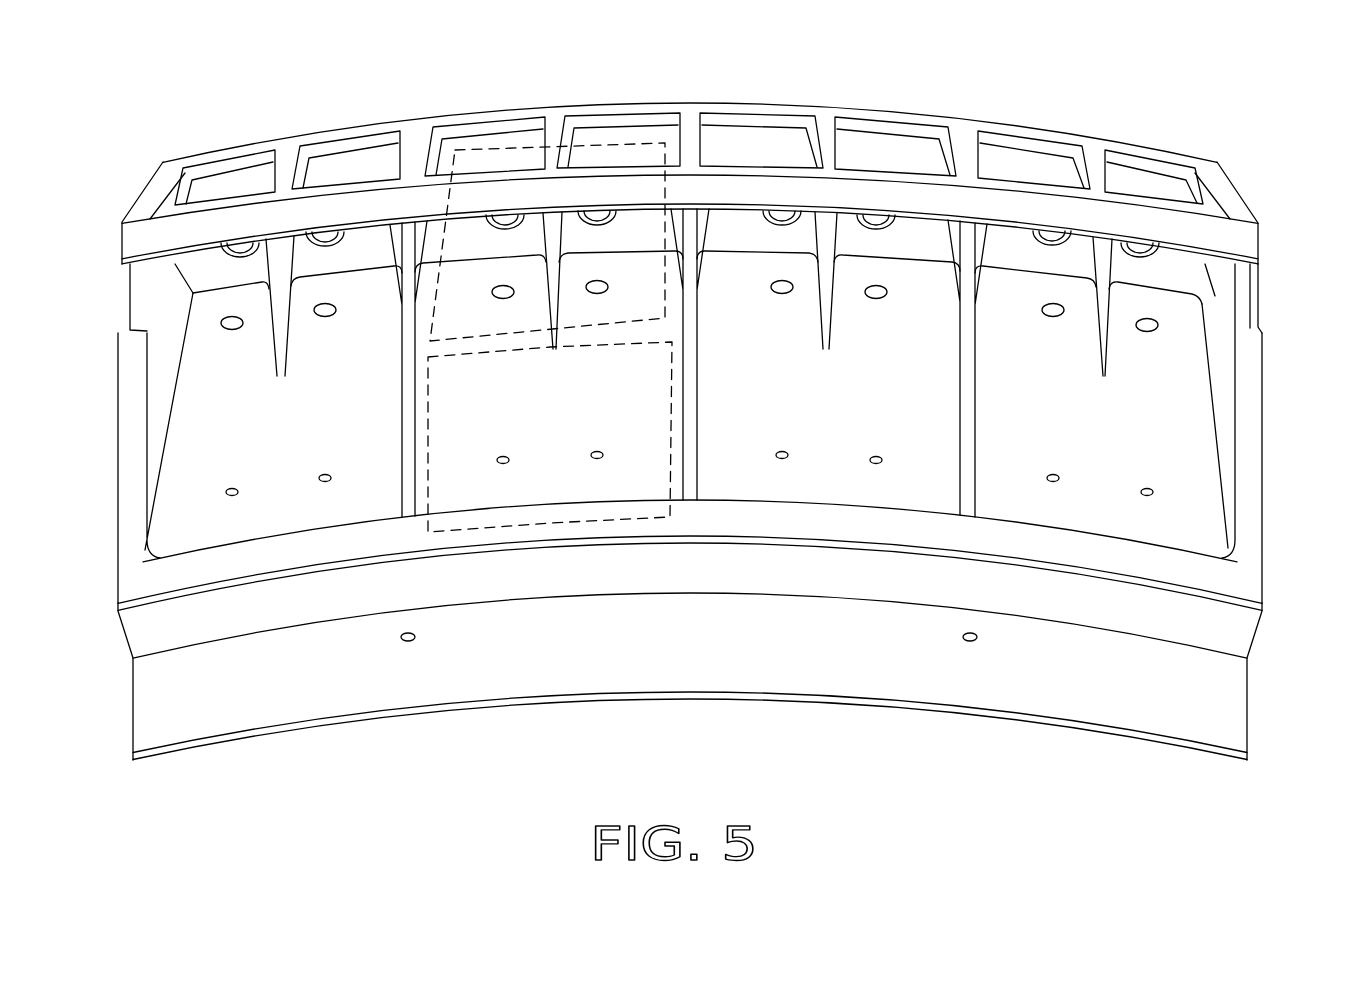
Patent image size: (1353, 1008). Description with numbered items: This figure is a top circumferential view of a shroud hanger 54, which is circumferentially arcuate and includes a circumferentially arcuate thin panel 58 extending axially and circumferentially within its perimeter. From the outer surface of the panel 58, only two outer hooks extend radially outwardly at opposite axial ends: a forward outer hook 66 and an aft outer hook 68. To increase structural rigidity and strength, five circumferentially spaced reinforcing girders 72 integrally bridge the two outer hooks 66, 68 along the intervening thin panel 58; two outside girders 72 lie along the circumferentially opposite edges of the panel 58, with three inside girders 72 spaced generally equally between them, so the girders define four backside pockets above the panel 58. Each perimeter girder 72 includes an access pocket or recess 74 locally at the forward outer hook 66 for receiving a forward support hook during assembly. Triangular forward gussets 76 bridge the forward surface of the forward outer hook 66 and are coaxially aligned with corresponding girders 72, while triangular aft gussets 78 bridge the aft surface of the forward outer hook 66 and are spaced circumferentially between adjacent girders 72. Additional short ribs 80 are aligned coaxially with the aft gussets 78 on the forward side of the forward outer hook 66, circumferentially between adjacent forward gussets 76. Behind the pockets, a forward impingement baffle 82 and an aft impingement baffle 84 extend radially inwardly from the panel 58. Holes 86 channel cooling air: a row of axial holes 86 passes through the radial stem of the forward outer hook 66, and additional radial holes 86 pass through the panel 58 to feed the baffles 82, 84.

The shroud hanger 54 is at (915, 100).
The panel 58 is at (930, 401).
The forward outer hook 66 is at (1263, 244).
The aft outer hook 68 is at (1267, 589).
The reinforcing girders 72 is at (117, 393).
The access pocket or recess 74 is at (128, 297).
The forward gussets 76 is at (392, 152).
The aft gussets 78 is at (277, 328).
The short ribs 80 is at (268, 168).
The forward impingement baffle 82 is at (468, 148).
The aft impingement baffle 84 is at (637, 517).
The holes 86 is at (503, 453).